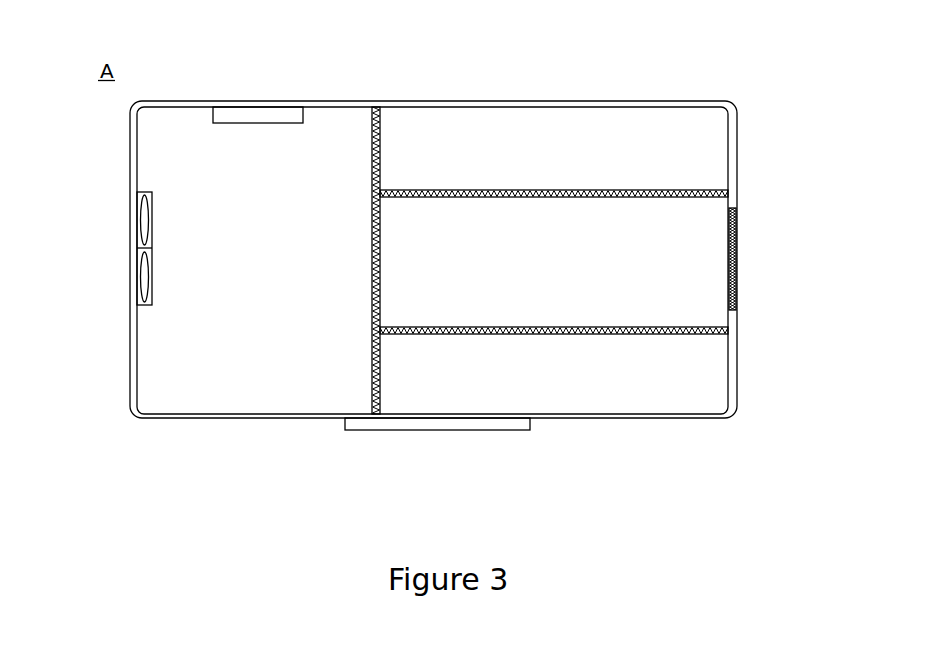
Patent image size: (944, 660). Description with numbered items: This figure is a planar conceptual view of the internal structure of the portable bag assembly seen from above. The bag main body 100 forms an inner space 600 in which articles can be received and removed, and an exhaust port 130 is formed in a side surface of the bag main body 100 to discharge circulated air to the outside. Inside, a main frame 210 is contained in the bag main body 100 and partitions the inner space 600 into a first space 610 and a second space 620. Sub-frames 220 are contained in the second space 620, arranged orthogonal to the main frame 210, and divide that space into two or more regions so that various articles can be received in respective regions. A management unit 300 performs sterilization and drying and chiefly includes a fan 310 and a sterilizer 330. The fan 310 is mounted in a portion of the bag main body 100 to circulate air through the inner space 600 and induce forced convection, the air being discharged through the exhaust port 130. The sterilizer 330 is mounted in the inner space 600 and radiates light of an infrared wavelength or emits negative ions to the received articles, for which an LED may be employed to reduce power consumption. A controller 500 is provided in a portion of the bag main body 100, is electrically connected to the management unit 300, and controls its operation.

The bag main body 100 is at (191, 419).
The exhaust port 130 is at (733, 263).
The main frame 210 is at (375, 280).
The sub-frames 220 is at (560, 198).
The management unit 300 is at (260, 257).
The fan 310 is at (152, 262).
The sterilizer 330 is at (248, 124).
The controller 500 is at (480, 430).
The inner space 600 is at (530, 42).
The first space 610 is at (347, 141).
The second space 620 is at (448, 372).